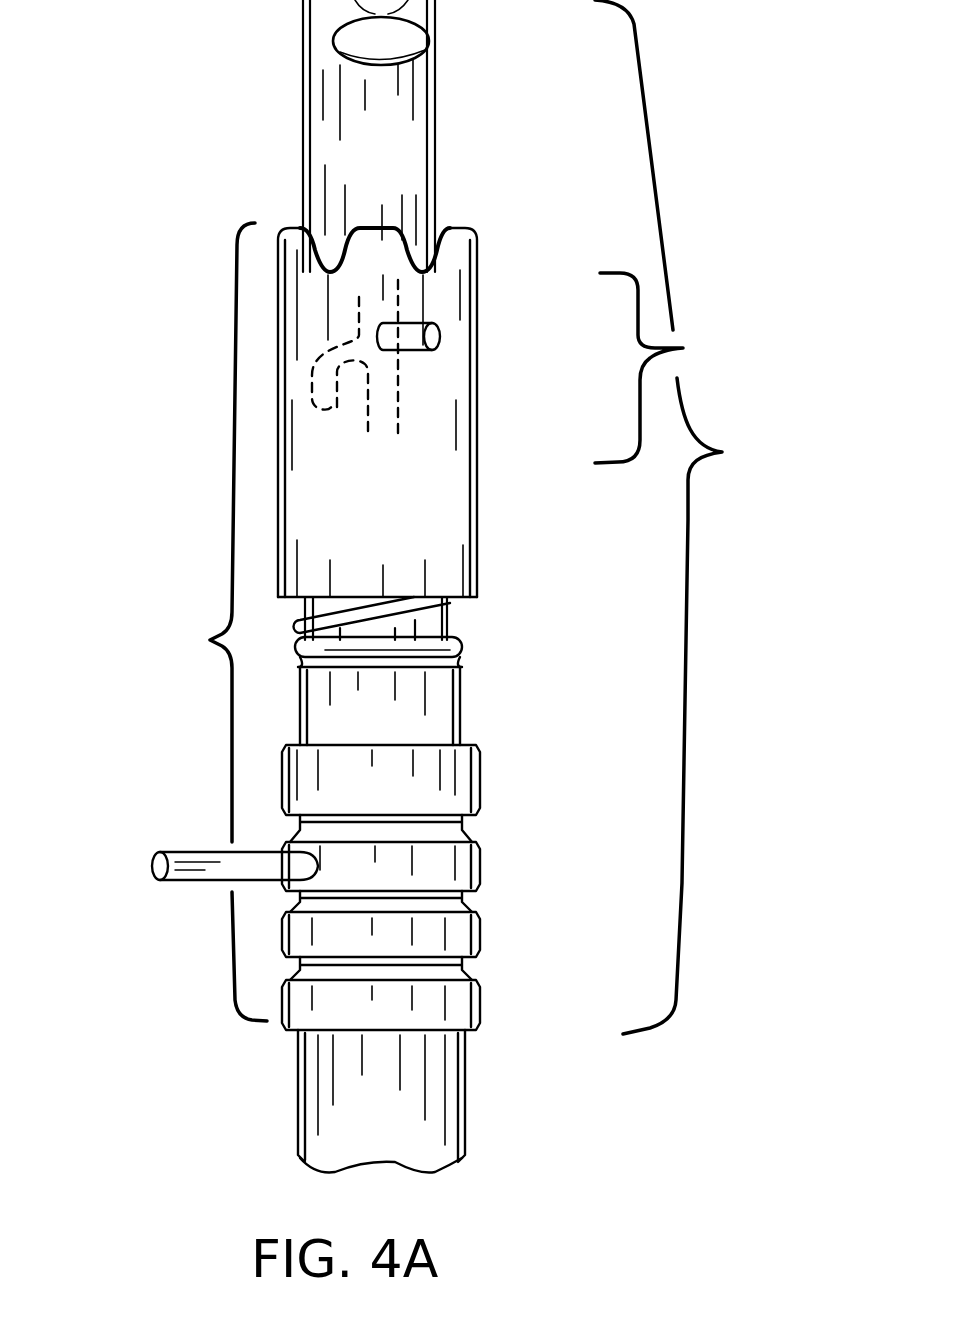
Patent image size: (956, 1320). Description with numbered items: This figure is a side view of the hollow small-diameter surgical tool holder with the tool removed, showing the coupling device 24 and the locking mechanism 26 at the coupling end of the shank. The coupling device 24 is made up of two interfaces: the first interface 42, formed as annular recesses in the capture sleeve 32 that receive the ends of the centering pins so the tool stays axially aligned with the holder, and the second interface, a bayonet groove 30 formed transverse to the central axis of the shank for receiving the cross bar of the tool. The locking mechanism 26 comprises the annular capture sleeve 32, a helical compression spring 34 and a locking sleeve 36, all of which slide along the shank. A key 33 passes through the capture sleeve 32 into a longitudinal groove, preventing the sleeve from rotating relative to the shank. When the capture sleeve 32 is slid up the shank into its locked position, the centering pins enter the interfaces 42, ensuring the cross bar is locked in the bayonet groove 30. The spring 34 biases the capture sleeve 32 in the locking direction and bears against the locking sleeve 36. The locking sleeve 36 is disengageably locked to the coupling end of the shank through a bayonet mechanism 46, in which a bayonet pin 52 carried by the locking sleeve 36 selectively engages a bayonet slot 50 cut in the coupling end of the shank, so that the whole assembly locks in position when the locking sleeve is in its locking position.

The coupling device 24 is at (689, 517).
The locking mechanism 26 is at (210, 640).
The bayonet groove 30 is at (370, 52).
The capture sleeve 32 is at (430, 435).
The key 33 is at (415, 335).
The helical compression spring 34 is at (343, 609).
The locking sleeve 36 is at (448, 787).
The first interface 42 is at (312, 253).
The bayonet mechanism 46 is at (683, 348).
The bayonet slot 50 is at (402, 400).
The bayonet pin 52 is at (212, 862).